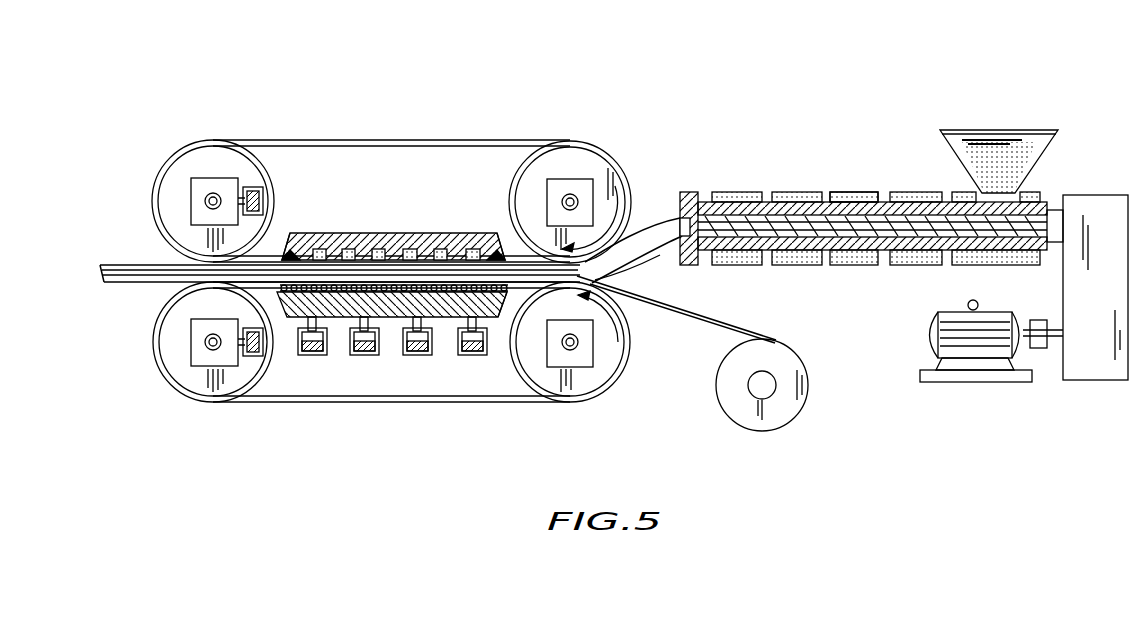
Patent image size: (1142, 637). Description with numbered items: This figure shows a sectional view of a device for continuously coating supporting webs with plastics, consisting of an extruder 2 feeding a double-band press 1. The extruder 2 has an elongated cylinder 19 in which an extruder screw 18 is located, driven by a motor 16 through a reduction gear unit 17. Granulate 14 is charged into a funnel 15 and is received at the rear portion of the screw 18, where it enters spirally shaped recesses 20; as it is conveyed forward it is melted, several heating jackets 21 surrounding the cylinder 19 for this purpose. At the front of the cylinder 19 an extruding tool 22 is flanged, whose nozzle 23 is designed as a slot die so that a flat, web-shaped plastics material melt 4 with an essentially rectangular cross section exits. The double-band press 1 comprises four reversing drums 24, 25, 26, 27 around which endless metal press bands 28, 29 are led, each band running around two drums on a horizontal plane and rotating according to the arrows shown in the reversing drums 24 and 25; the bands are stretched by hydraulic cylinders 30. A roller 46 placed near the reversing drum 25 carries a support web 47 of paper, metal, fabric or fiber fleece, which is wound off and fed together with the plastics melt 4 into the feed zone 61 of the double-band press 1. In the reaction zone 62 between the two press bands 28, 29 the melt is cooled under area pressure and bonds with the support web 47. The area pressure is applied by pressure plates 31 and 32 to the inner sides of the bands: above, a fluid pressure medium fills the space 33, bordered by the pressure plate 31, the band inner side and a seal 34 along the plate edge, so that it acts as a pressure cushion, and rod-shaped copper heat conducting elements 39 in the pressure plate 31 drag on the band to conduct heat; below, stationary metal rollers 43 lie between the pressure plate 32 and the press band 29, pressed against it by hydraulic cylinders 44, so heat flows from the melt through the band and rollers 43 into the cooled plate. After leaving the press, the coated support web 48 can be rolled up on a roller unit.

The double-band press 1 is at (288, 128).
The extruder 2 is at (927, 170).
The plastics material melt 4 is at (662, 247).
The granulate 14 is at (990, 150).
The funnel 15 is at (1022, 140).
The motor 16 is at (962, 350).
The reduction gear unit 17 is at (1098, 362).
The extruder screw 18 is at (772, 222).
The cylinder 19 is at (812, 200).
The spirally shaped recesses 20 is at (975, 240).
The heating jackets 21 is at (857, 193).
The extruding tool 22 is at (688, 192).
The nozzle 23 is at (672, 208).
The reversing drum 24 is at (582, 160).
The reversing drum 25 is at (582, 388).
The reversing drum 26 is at (173, 362).
The reversing drum 27 is at (167, 182).
The press band 28 is at (220, 138).
The press band 29 is at (537, 400).
The hydraulic cylinders 30 is at (250, 358).
The pressure plate 31 is at (490, 247).
The pressure plate 32 is at (500, 297).
The space 33 is at (423, 252).
The seal 34 is at (287, 253).
The heat conducting elements 39 is at (378, 252).
The rollers 43 is at (460, 292).
The hydraulic cylinders 44 is at (307, 355).
The roller 46 is at (793, 408).
The support web 47 is at (698, 322).
The coated support web 48 is at (122, 272).
The feed zone 61 is at (626, 300).
The reaction zone 62 is at (390, 317).